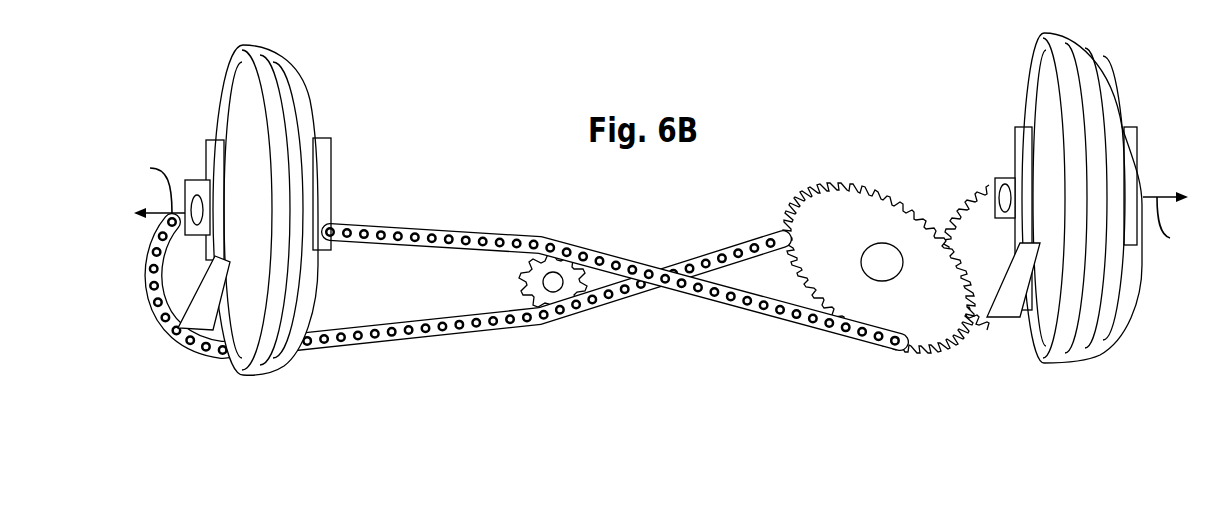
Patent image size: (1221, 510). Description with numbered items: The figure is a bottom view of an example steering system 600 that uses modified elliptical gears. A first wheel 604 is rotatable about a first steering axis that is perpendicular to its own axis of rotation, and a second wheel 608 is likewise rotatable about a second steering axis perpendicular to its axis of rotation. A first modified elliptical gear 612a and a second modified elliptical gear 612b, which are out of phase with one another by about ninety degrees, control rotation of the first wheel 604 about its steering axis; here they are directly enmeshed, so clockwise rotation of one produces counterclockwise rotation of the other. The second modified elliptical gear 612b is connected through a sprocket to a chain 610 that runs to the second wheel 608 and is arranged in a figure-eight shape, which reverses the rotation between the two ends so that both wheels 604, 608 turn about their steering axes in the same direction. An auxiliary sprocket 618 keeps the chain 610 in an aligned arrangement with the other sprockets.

The steering system 600 is at (146, 135).
The first wheel 604 is at (1032, 103).
The second wheel 608 is at (312, 118).
The chain 610 is at (488, 233).
The first modified elliptical gear 612a is at (965, 208).
The second modified elliptical gear 612b is at (910, 323).
The auxiliary sprocket 618 is at (533, 272).